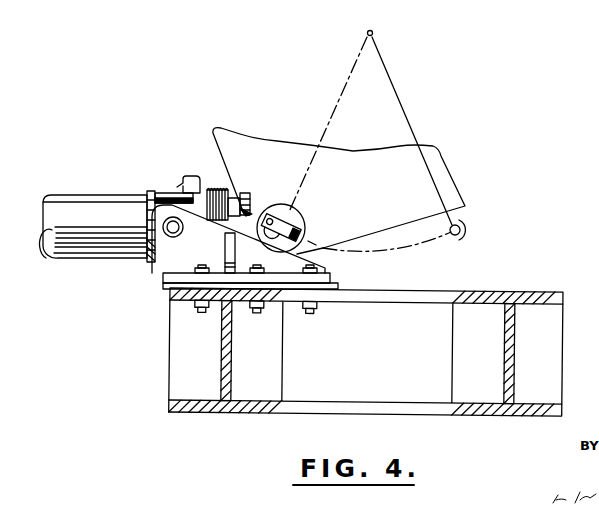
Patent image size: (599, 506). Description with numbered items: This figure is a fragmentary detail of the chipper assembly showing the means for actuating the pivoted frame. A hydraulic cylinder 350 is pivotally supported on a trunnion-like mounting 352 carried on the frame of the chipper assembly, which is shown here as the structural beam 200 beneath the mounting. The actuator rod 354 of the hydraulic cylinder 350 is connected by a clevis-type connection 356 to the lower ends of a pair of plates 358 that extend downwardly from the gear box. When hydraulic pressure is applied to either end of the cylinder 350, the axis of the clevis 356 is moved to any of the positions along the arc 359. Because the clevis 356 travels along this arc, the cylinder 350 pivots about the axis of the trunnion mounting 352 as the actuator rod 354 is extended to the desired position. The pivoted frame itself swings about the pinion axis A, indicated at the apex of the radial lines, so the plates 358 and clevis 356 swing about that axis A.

The frame beam 200 is at (517, 338).
The hydraulic cylinder 350 is at (92, 198).
The trunnion-like mounting 352 is at (167, 248).
The actuator rod 354 is at (234, 207).
The clevis-type connection 356 is at (301, 221).
The plates 358 is at (443, 180).
The arc 359 is at (422, 248).
The pinion axis A is at (373, 30).